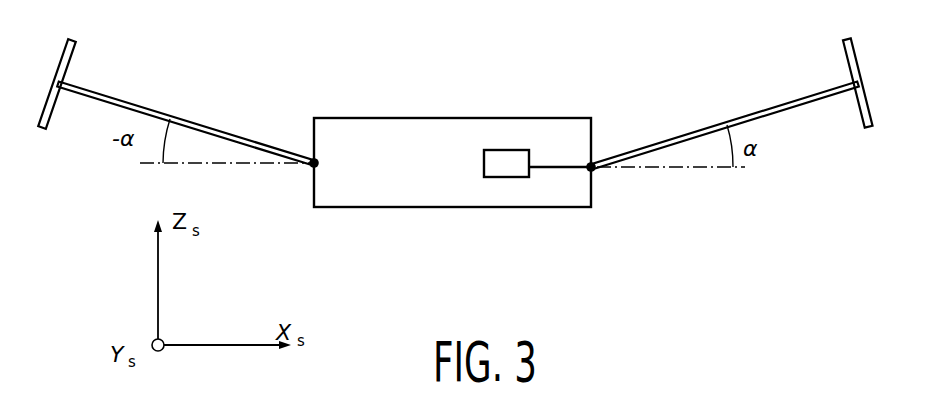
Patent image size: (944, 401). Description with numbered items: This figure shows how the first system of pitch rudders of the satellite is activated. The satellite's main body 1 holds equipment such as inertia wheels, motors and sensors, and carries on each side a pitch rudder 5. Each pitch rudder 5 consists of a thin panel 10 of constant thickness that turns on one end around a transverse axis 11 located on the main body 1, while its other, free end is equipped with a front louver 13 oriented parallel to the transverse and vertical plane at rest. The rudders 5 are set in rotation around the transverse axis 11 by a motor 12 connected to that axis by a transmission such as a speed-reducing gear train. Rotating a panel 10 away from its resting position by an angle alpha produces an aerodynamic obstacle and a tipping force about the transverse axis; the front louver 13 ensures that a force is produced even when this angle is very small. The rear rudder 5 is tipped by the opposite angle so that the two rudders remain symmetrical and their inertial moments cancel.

The main body 1 is at (483, 118).
The pitch rudder 5 is at (455, 116).
The thin panel 10 is at (782, 100).
The transverse axis 11 is at (593, 171).
The motor 12 is at (512, 175).
The front louver 13 is at (857, 119).